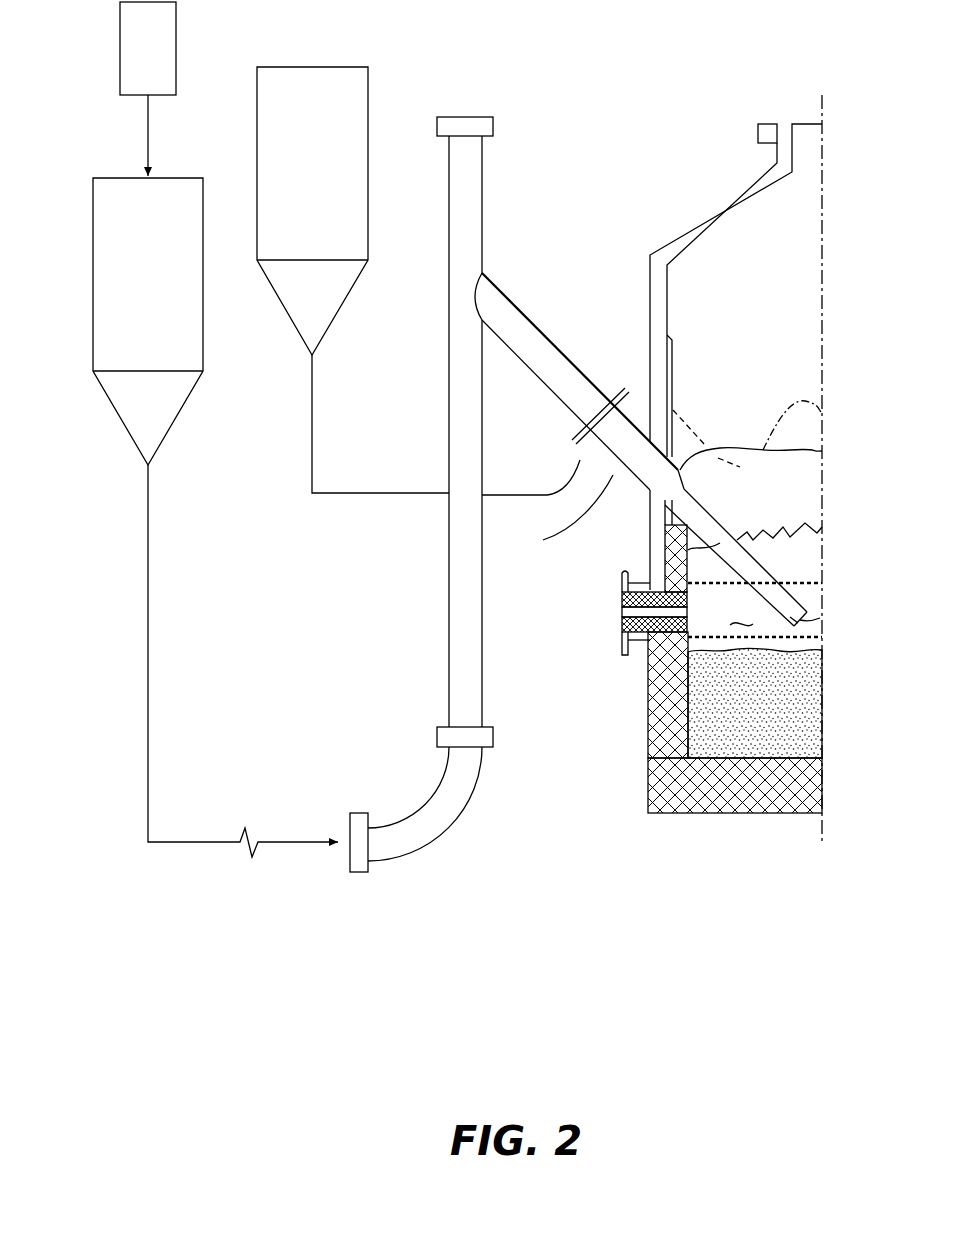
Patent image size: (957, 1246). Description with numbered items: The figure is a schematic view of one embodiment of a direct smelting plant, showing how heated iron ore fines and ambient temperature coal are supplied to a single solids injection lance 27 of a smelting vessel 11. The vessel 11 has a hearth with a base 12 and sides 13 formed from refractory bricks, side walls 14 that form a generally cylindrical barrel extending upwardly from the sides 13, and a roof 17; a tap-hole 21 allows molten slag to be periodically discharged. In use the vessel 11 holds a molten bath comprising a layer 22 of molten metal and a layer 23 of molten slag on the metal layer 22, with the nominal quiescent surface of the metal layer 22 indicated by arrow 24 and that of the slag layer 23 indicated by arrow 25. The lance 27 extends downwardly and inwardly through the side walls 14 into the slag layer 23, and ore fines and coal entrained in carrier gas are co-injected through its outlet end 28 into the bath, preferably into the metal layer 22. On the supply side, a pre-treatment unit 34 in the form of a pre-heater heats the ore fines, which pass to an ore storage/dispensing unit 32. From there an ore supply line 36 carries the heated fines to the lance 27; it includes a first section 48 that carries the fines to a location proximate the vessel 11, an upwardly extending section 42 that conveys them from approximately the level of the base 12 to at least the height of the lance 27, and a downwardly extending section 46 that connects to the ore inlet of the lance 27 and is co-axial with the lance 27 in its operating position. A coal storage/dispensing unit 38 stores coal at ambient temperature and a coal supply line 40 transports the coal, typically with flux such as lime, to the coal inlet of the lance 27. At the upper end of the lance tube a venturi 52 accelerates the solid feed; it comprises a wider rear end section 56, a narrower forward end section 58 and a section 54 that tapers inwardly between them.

The vessel 11 is at (685, 220).
The base 12 is at (663, 787).
The sides 13 is at (668, 680).
The side walls 14 is at (650, 543).
The roof 17 is at (753, 187).
The tap-hole 21 is at (628, 600).
The layer of molten metal 22 is at (783, 717).
The layer of molten slag 23 is at (740, 611).
The arrow indicating quiescent surface of metal layer 24 is at (822, 637).
The arrow indicating quiescent surface of slag layer 25 is at (822, 583).
The solids injection lance 27 is at (710, 488).
The outlet end 28 is at (820, 618).
The ore storage/dispensing unit 32 is at (93, 270).
The pre-treatment unit 34 is at (120, 47).
The ore supply line 36 is at (252, 755).
The coal storage/dispensing unit 38 is at (257, 128).
The coal supply line 40 is at (383, 494).
The upwardly extending section 42 is at (449, 430).
The downwardly extending section 46 is at (547, 337).
The first section 48 is at (192, 842).
The venturi 52 is at (702, 442).
The tapering section 54 is at (565, 514).
The wider rear end section 56 is at (548, 508).
The narrower forward end section 58 is at (822, 451).